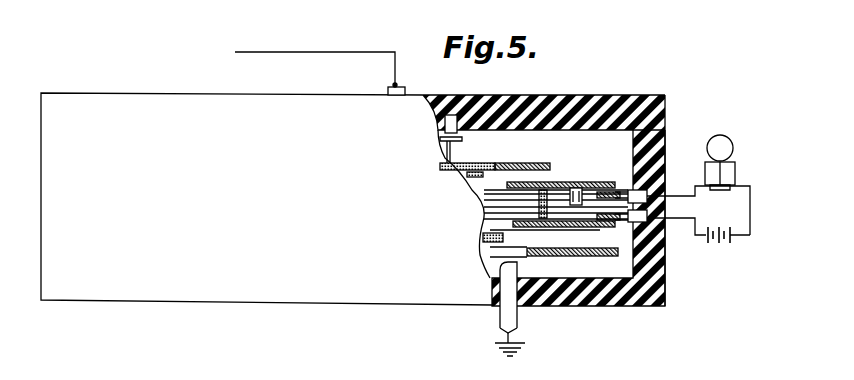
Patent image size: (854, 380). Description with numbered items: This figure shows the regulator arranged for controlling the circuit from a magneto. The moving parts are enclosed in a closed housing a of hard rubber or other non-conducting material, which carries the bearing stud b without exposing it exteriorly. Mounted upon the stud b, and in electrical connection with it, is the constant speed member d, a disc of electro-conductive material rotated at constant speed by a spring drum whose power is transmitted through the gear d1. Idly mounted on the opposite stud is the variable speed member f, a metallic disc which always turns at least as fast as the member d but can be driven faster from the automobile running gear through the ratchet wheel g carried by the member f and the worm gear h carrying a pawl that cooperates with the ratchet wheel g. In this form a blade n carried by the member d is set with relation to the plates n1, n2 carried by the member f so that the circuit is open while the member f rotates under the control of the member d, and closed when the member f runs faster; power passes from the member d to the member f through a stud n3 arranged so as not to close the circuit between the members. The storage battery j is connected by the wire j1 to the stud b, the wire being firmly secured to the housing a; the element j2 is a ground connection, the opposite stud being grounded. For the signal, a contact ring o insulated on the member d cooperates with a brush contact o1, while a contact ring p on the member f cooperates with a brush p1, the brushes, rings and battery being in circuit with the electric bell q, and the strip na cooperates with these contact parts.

The closed housing a is at (621, 97).
The bearing stud b is at (491, 98).
The constant speed member d is at (579, 188).
The gear d1 is at (550, 163).
The variable speed member f is at (558, 228).
The ratchet wheel g is at (483, 242).
The worm gear h is at (603, 265).
The storage battery j is at (722, 244).
The wire j1 is at (320, 73).
The ground connection j2 is at (505, 334).
The blade n is at (546, 188).
The plate n1 is at (487, 205).
The plate n2 is at (548, 227).
The stud n3 is at (612, 192).
The contact strip na is at (592, 222).
The contact ring o is at (621, 190).
The brush contact o1 is at (666, 141).
The contact ring p is at (665, 270).
The brush p1 is at (667, 246).
The electric bell q is at (728, 140).